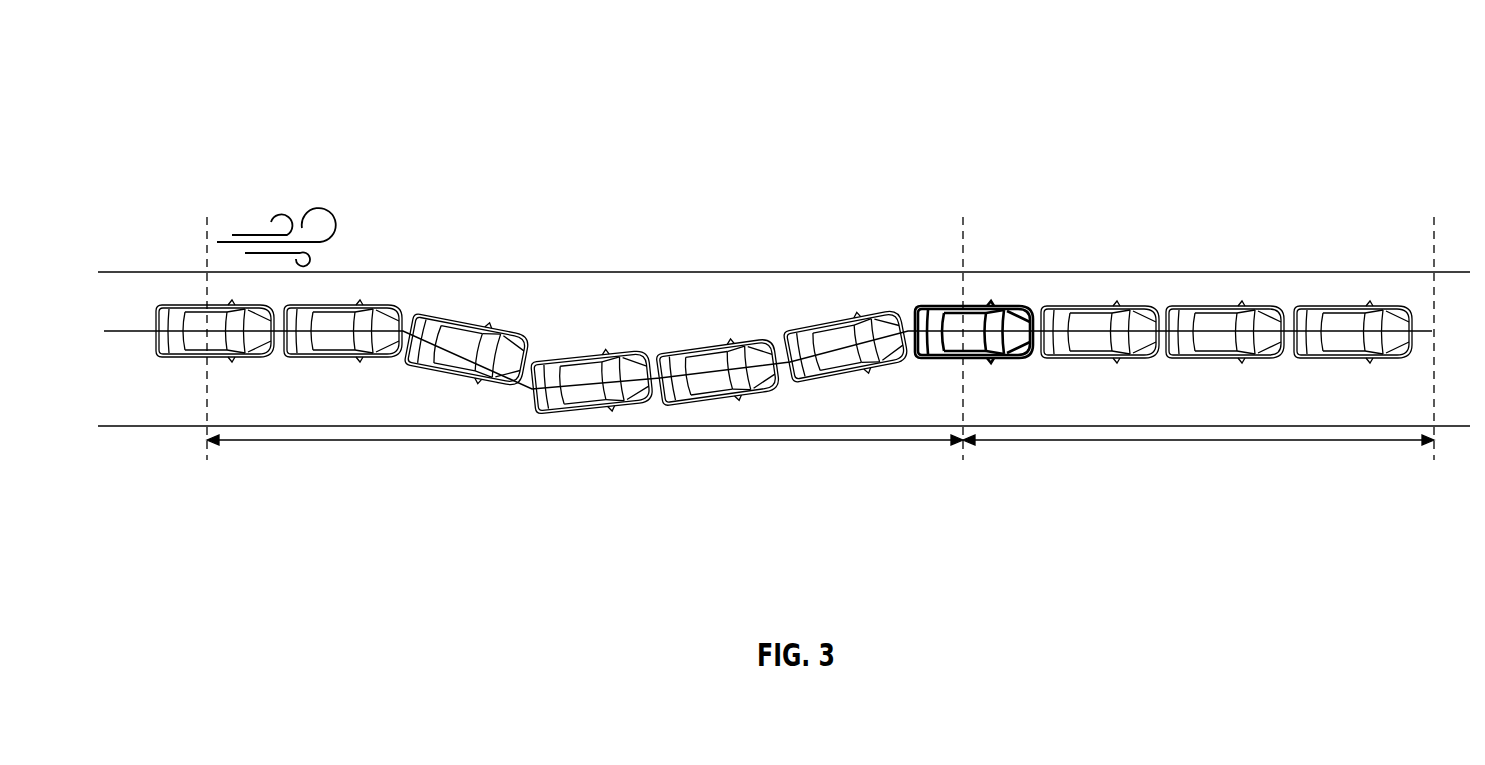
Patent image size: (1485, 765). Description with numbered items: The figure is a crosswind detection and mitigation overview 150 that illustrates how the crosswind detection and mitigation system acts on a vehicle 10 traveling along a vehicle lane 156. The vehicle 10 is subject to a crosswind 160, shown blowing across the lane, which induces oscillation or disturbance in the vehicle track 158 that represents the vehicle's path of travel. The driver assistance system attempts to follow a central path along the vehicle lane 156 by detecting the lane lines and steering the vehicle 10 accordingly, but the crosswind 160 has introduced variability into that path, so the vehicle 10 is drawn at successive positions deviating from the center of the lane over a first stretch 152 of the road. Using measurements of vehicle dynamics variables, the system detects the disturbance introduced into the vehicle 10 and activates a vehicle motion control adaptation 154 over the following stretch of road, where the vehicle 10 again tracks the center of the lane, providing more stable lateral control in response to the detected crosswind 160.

The vehicle 10 is at (978, 308).
The crosswind detection and mitigation overview 150 is at (1280, 110).
The first road segment 152 is at (659, 440).
The vehicle motion control adaptation 154 is at (1197, 440).
The vehicle lane 156 is at (1298, 272).
The vehicle track 158 is at (122, 332).
The crosswind 160 is at (282, 213).